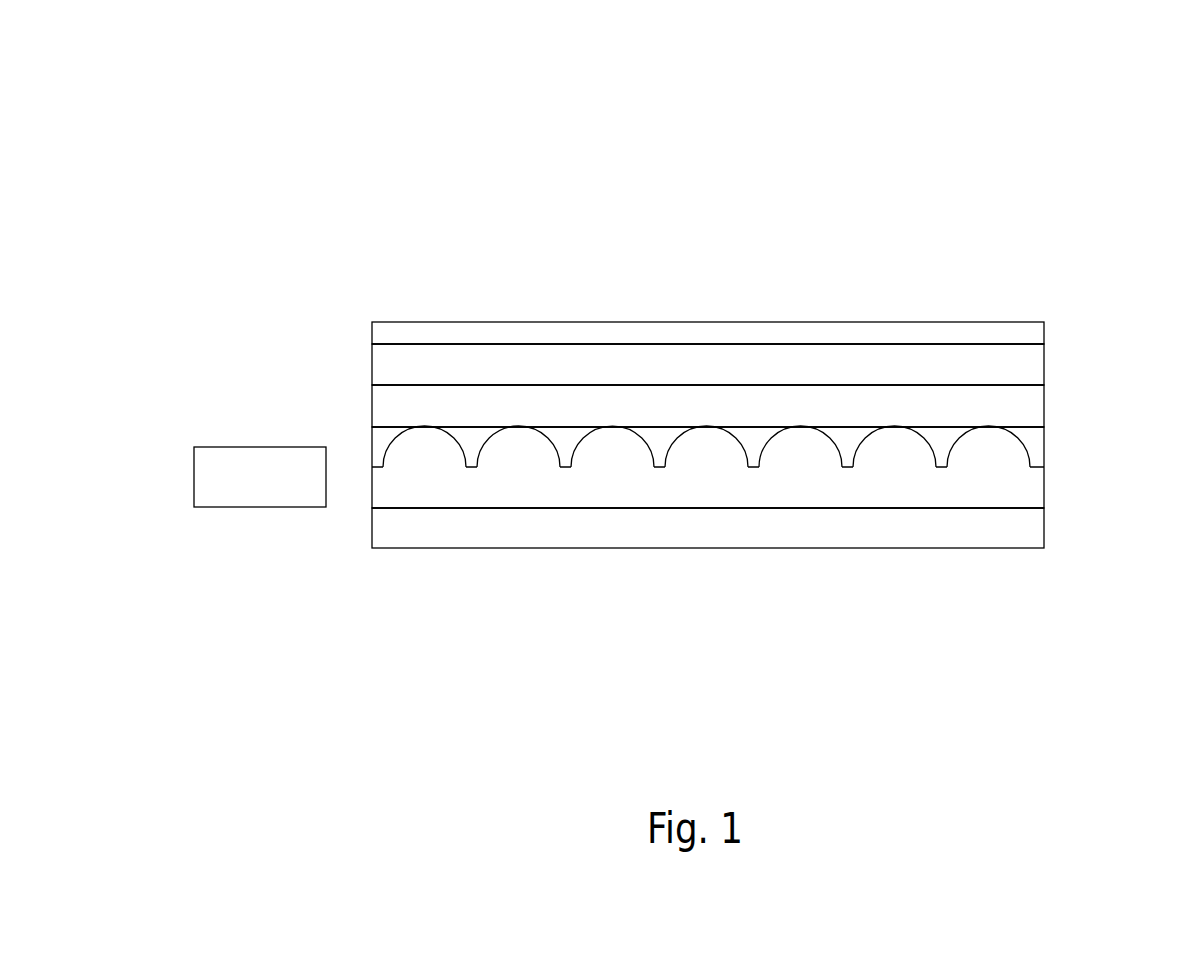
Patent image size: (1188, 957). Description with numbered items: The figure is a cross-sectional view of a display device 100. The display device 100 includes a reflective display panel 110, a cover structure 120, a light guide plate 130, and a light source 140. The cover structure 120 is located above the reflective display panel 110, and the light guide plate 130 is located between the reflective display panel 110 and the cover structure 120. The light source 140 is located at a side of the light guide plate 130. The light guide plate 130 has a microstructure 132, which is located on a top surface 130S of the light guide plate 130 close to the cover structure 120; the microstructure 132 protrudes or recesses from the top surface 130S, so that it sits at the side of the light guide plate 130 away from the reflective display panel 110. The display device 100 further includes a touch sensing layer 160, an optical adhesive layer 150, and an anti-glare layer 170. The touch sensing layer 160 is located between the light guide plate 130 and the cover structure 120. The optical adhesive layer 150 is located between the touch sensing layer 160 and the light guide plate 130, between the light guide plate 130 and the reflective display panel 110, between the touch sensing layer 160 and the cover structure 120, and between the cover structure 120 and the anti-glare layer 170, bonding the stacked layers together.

The display device 100 is at (243, 97).
The reflective display panel 110 is at (1044, 531).
The cover structure 120 is at (1044, 364).
The light guide plate 130 is at (1044, 496).
The top surface 130S is at (1037, 467).
The microstructure 132 is at (1015, 445).
The light source 140 is at (235, 458).
The optical adhesive layer 150 is at (457, 427).
The touch sensing layer 160 is at (1044, 404).
The anti-glare layer 170 is at (1044, 333).